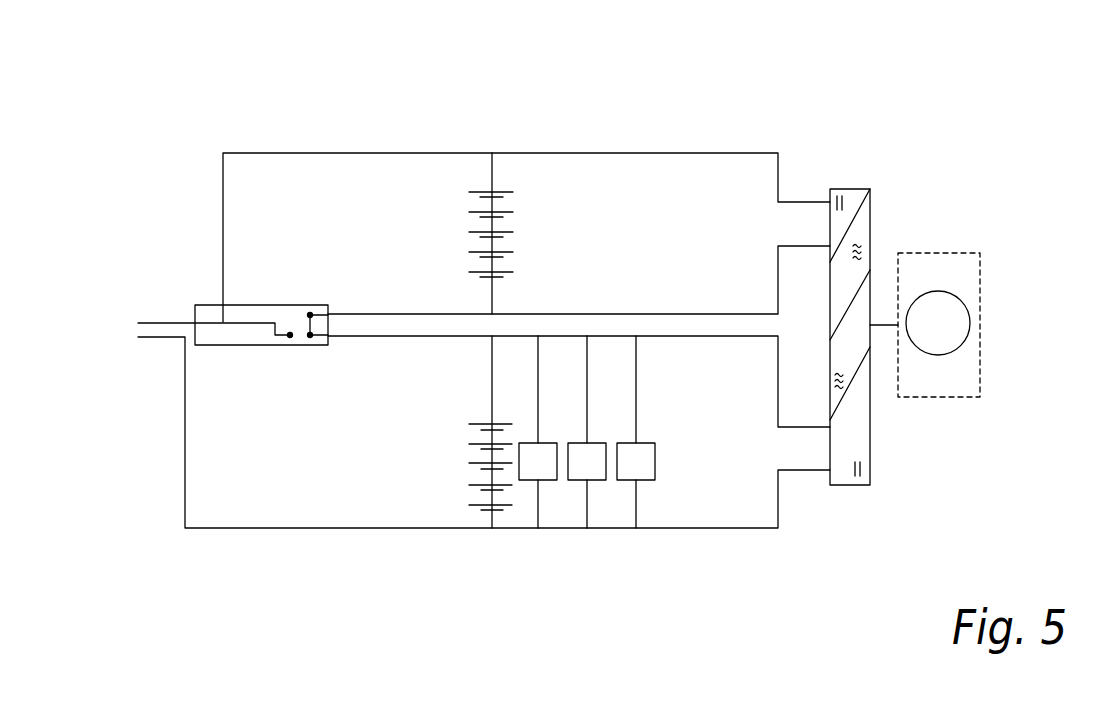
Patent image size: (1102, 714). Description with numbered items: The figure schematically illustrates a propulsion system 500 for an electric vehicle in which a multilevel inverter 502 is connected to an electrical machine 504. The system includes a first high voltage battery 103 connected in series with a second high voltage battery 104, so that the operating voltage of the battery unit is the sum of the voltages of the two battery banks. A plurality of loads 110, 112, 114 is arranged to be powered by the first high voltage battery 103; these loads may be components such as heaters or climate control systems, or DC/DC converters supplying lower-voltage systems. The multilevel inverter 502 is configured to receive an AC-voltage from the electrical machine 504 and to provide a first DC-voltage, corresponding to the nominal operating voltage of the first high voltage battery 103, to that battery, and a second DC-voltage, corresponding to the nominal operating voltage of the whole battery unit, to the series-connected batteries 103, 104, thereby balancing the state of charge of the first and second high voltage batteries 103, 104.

The propulsion system 500 is at (950, 113).
The second high voltage battery 104 is at (492, 237).
The first high voltage battery 103 is at (491, 467).
The load 110 is at (545, 442).
The load 112 is at (597, 442).
The load 114 is at (645, 442).
The multilevel inverter 502 is at (836, 188).
The electrical machine 504 is at (948, 290).